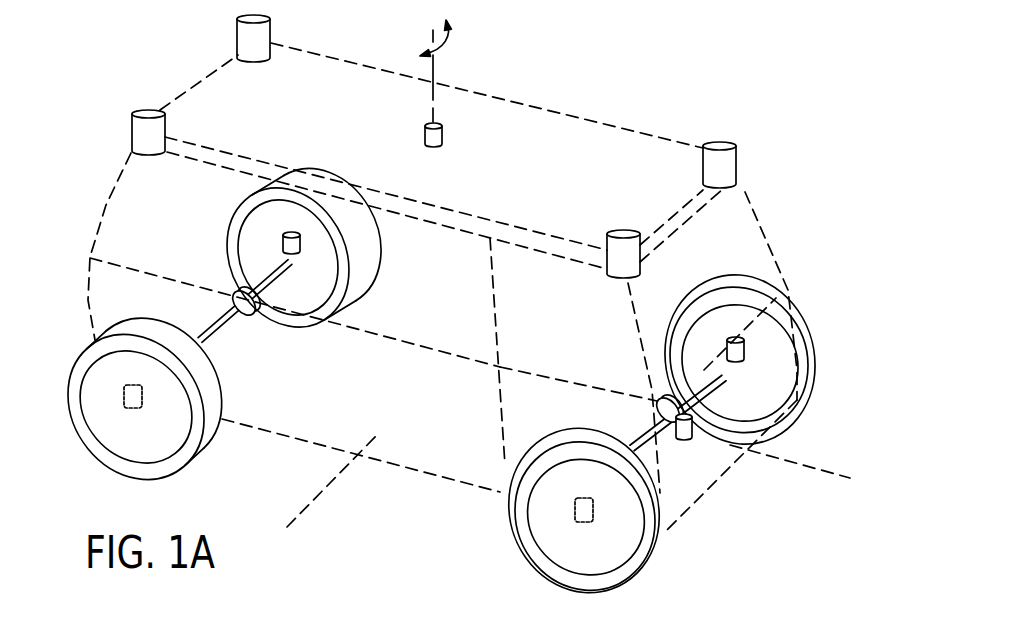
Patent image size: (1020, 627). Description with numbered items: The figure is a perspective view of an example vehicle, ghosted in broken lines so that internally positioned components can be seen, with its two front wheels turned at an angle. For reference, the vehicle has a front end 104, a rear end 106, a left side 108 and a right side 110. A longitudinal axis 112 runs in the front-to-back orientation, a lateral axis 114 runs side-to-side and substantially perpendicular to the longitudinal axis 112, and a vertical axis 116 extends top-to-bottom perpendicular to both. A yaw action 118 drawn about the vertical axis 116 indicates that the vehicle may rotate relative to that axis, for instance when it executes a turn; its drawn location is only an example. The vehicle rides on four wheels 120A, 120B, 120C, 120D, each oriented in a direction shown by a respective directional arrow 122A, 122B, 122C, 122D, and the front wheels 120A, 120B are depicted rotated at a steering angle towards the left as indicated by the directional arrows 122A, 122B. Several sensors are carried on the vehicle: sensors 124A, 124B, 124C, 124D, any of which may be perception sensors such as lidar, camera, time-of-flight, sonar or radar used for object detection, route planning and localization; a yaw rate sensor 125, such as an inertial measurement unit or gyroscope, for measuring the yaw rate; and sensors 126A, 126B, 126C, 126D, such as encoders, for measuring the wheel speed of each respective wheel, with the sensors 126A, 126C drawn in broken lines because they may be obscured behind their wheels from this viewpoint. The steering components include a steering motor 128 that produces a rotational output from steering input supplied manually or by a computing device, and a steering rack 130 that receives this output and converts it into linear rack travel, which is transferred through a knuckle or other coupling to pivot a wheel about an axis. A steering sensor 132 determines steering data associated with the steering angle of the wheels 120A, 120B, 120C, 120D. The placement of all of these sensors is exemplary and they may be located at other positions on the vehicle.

The front end 104 is at (735, 243).
The rear end 106 is at (108, 153).
The left side 108 is at (598, 110).
The right side 110 is at (132, 294).
The longitudinal axis 112 is at (826, 480).
The lateral axis 114 is at (334, 500).
The vertical axis 116 is at (432, 112).
The yaw action 118 is at (449, 38).
The wheel 120A is at (522, 568).
The wheel 120B is at (815, 385).
The wheel 120C is at (183, 472).
The wheel 120D is at (226, 246).
The directional arrow 122A is at (716, 502).
The directional arrow 122B is at (822, 338).
The directional arrow 122C is at (213, 407).
The directional arrow 122D is at (370, 257).
The sensor 124A is at (625, 232).
The sensor 124B is at (719, 145).
The sensor 124C is at (148, 112).
The sensor 124D is at (238, 30).
The yaw rate sensor 125 is at (442, 143).
The sensor 126A is at (580, 522).
The sensor 126B is at (741, 360).
The sensor 126C is at (134, 408).
The sensor 126D is at (295, 254).
The steering motor 128 is at (657, 404).
The steering rack 130 is at (658, 416).
The steering sensor 132 is at (686, 440).